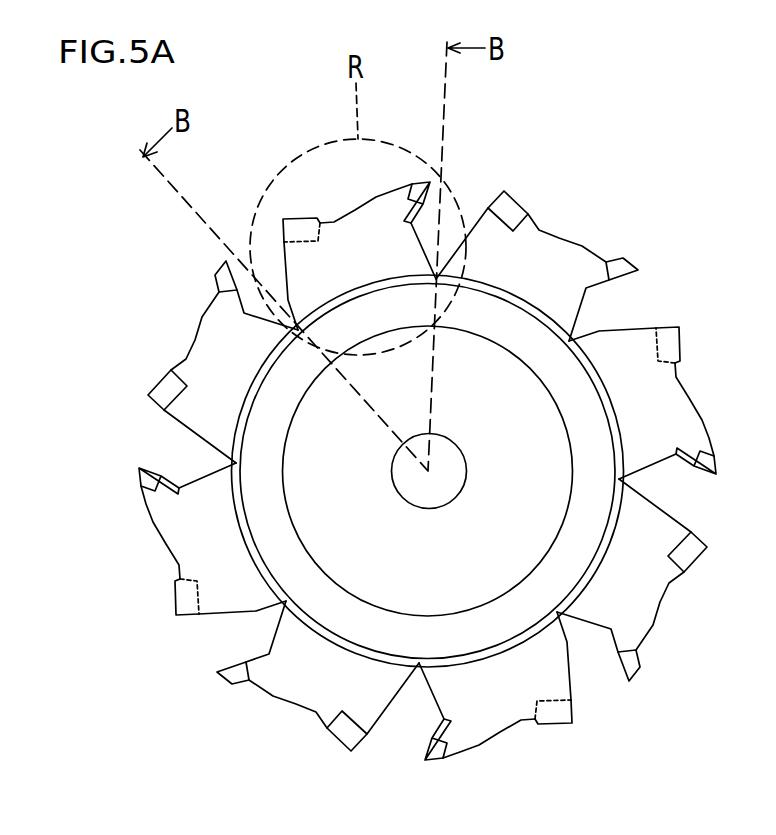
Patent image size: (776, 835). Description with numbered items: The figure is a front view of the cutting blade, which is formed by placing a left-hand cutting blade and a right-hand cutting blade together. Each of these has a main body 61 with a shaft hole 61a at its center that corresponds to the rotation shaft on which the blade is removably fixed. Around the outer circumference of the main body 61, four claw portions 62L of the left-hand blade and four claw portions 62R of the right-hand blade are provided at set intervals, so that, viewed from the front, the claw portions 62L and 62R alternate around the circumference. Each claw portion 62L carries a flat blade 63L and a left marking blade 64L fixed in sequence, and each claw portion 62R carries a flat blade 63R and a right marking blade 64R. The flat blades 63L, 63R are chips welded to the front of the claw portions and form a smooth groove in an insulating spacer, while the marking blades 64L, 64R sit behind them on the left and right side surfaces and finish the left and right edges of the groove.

The main body 61 is at (538, 432).
The shaft hole 61a is at (455, 475).
The claw portion 62L is at (352, 212).
The claw portion 62R is at (562, 247).
The flat blade 63L is at (428, 181).
The flat blade 63R is at (633, 273).
The left marking blade 64L is at (298, 220).
The right marking blade 64R is at (512, 212).